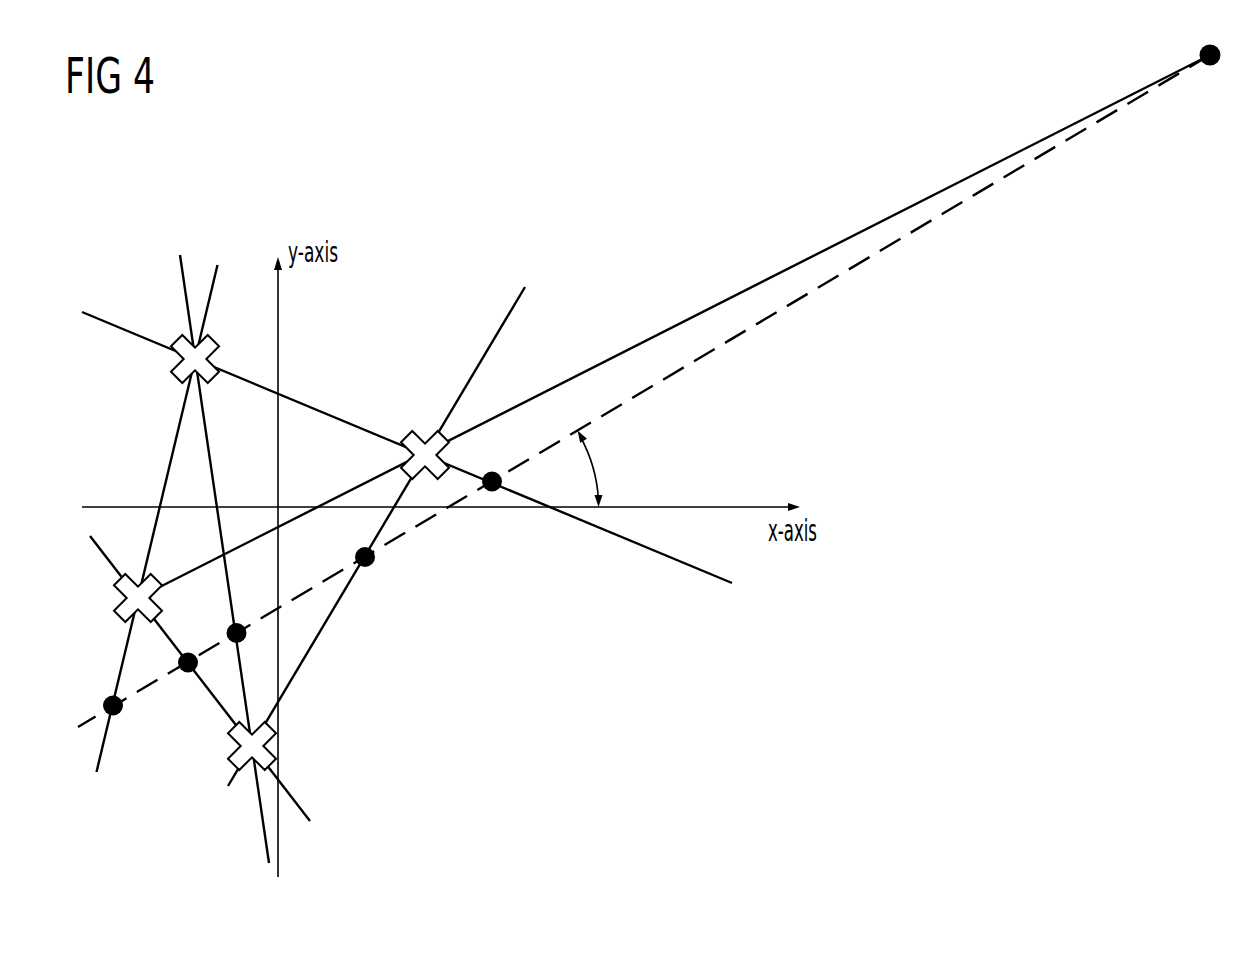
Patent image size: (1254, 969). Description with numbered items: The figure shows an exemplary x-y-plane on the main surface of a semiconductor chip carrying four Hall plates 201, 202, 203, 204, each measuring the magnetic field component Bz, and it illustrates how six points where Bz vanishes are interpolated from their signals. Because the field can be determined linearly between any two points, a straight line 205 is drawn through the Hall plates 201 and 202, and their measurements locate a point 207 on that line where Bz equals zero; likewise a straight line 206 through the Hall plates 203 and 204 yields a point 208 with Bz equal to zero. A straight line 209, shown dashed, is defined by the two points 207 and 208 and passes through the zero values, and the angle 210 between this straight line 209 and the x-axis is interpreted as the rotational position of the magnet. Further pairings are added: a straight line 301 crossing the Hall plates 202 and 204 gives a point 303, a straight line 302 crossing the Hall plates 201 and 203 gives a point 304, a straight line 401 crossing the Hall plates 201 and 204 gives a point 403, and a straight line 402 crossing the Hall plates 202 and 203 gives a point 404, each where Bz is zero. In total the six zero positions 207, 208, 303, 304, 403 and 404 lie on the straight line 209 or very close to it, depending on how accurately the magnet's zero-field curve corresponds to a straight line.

The Hall plate 201 is at (172, 373).
The Hall plate 202 is at (115, 595).
The Hall plate 203 is at (408, 437).
The Hall plate 204 is at (237, 770).
The straight line 205 is at (216, 270).
The straight line 206 is at (502, 323).
The point 207 is at (105, 700).
The point 208 is at (373, 563).
The straight line 209 is at (840, 276).
The angle 210 is at (600, 468).
The straight line 301 is at (306, 815).
The straight line 302 is at (100, 318).
The point 303 is at (187, 673).
The point 304 is at (488, 490).
The straight line 401 is at (181, 270).
The straight line 402 is at (757, 286).
The point 403 is at (248, 633).
The point 404 is at (1213, 67).